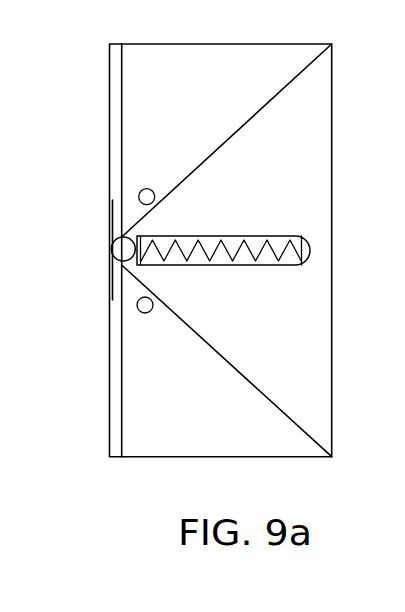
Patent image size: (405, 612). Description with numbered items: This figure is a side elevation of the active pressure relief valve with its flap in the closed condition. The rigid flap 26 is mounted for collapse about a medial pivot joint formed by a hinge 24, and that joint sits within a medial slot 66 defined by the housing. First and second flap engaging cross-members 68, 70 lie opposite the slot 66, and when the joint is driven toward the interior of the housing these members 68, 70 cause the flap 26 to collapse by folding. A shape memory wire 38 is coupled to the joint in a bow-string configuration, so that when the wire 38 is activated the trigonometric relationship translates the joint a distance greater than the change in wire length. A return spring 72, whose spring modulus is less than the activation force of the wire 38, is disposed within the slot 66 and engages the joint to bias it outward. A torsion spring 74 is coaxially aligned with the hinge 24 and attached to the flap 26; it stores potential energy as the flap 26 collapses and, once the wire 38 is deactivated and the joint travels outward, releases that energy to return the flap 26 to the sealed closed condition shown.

The hinge 24 is at (123, 248).
The rigid flap 26 is at (114, 399).
The shape memory wire 38 is at (262, 112).
The medial slot 66 is at (312, 250).
The first flap engaging cross-member 68 is at (147, 197).
The second flap engaging cross-member 70 is at (145, 305).
The return spring 72 is at (265, 257).
The torsion spring 74 is at (111, 278).